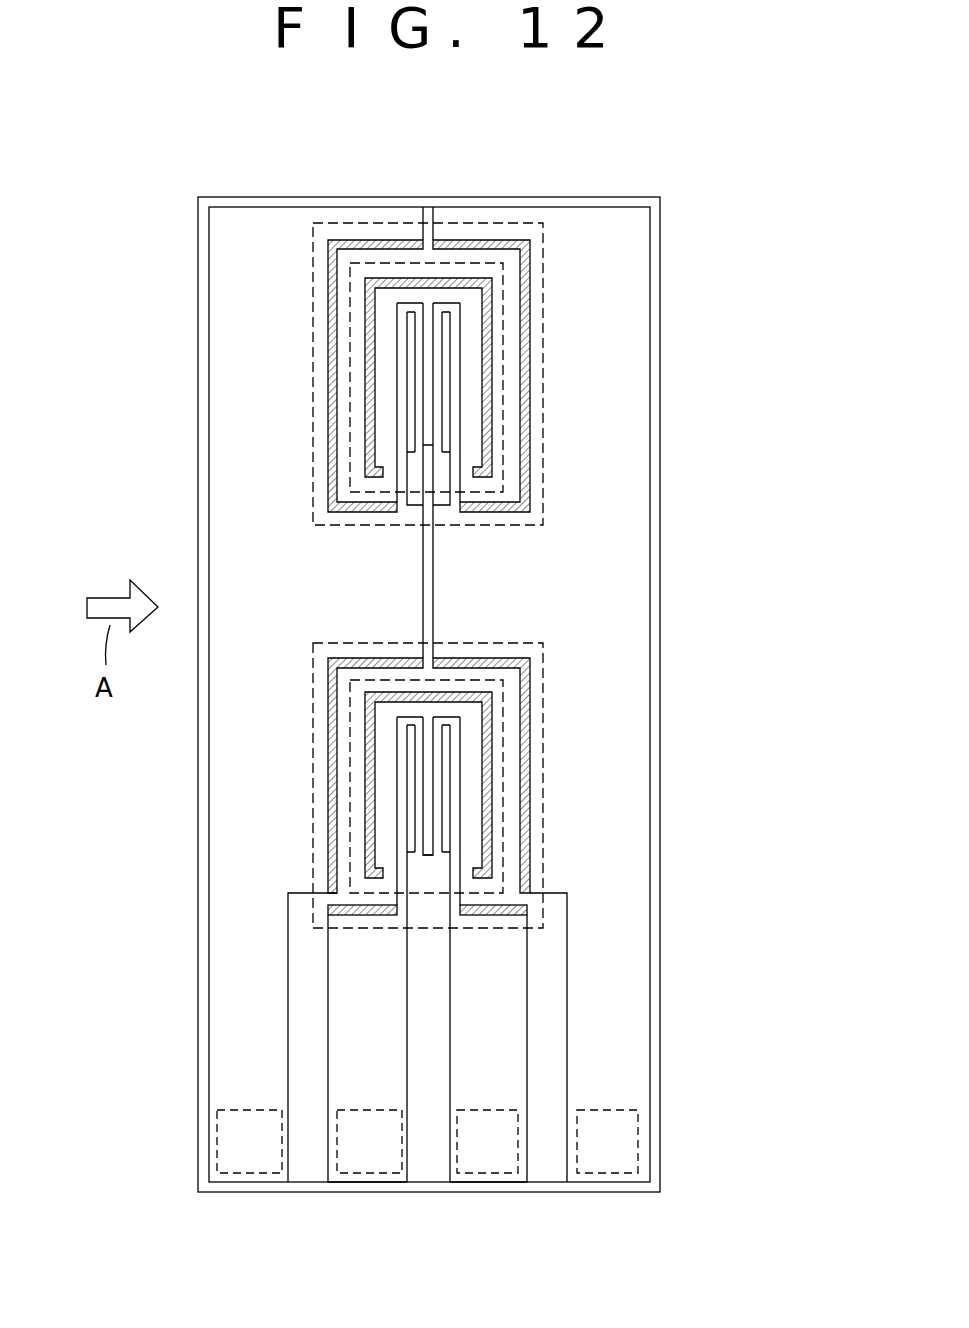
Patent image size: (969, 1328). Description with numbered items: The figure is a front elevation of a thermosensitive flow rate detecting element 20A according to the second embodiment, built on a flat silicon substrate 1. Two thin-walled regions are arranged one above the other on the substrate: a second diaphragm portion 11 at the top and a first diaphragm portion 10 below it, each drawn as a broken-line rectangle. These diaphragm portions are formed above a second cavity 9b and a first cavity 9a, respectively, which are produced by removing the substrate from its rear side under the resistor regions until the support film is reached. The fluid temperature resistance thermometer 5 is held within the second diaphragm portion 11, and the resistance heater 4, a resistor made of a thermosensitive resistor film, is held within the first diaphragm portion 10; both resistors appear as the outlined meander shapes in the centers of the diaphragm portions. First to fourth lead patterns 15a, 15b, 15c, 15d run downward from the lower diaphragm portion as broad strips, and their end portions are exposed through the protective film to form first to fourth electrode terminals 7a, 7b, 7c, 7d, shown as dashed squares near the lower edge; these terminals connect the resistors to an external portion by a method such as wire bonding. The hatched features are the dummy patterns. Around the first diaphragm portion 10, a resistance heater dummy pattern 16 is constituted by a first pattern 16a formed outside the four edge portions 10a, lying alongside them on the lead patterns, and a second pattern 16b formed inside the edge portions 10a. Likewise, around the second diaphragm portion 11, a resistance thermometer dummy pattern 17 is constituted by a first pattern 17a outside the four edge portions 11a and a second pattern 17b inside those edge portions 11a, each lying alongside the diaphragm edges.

The thermosensitive flow rate detecting element 20A is at (230, 136).
The flat substrate 1 is at (657, 955).
The resistance heater 4 is at (428, 857).
The fluid temperature resistance thermometer 5 is at (415, 452).
The first electrode terminal 7a is at (249, 1141).
The second electrode terminal 7b is at (369, 1141).
The third electrode terminal 7c is at (487, 1141).
The fourth electrode terminal 7d is at (607, 1141).
The first cavity 9a is at (386, 659).
The second cavity 9b is at (384, 241).
The first diaphragm portion 10 is at (462, 674).
The edge portion of first diaphragm portion 10a is at (351, 740).
The second diaphragm portion 11 is at (462, 256).
The edge portion of second diaphragm portion 11a is at (351, 340).
The first lead pattern 15a is at (282, 1037).
The second lead pattern 15b is at (367, 1048).
The third lead pattern 15c is at (488, 1048).
The fourth lead pattern 15d is at (581, 1037).
The resistance heater dummy pattern 16 is at (252, 792).
The first pattern 16a is at (332, 803).
The second pattern 16b is at (367, 850).
The resistance thermometer dummy pattern 17 is at (256, 413).
The first pattern 17a is at (332, 428).
The second pattern 17b is at (367, 472).